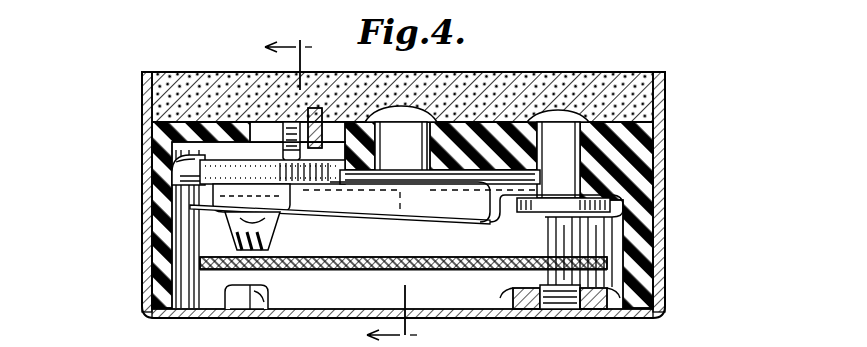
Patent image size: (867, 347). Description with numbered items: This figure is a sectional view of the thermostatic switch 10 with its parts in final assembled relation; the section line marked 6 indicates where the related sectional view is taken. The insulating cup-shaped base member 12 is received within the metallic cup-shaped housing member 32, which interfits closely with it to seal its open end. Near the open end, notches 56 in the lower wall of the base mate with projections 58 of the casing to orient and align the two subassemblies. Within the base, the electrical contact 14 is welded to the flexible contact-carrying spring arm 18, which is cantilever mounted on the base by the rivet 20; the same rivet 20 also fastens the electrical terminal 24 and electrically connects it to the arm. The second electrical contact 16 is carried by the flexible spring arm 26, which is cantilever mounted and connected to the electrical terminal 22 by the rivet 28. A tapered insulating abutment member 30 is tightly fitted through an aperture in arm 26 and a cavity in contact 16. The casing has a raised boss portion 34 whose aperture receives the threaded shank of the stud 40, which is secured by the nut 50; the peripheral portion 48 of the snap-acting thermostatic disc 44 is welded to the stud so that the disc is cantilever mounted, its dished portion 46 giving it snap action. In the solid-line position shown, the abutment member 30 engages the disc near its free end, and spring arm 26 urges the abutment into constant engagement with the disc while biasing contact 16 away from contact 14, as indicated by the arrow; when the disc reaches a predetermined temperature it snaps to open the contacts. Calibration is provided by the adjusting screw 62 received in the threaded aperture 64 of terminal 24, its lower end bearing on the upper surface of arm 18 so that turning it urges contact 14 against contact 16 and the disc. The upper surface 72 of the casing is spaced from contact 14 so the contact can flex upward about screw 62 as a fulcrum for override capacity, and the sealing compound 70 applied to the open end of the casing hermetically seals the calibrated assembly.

The thermostatic switch 10 is at (700, 118).
The cup-shaped base member 12 is at (648, 166).
The electrical contact 14 is at (150, 200).
The electrical contact 16 is at (290, 200).
The contact-carrying spring arm 18 is at (351, 200).
The rivet 20 is at (416, 162).
The electrical terminal 22 is at (540, 129).
The electrical terminal 24 is at (375, 129).
The spring arm 26 is at (413, 196).
The rivet 28 is at (572, 179).
The tapered insulating abutment member 30 is at (268, 247).
The cup-shaped housing member 32 is at (160, 236).
The raised boss portion 34 is at (500, 297).
The stud 40 is at (530, 280).
The snap-acting thermostatic disc 44 is at (342, 270).
The dished portion 46 is at (345, 258).
The peripheral portion 48 is at (546, 262).
The nut 50 is at (596, 311).
The notches 56 is at (272, 292).
The projections 58 is at (250, 311).
The adjusting screw 62 is at (320, 110).
The threaded aperture 64 is at (285, 122).
The sealing compound 70 is at (598, 78).
The upper surface 72 is at (190, 172).
The section line 6- 6 is at (348, 192).